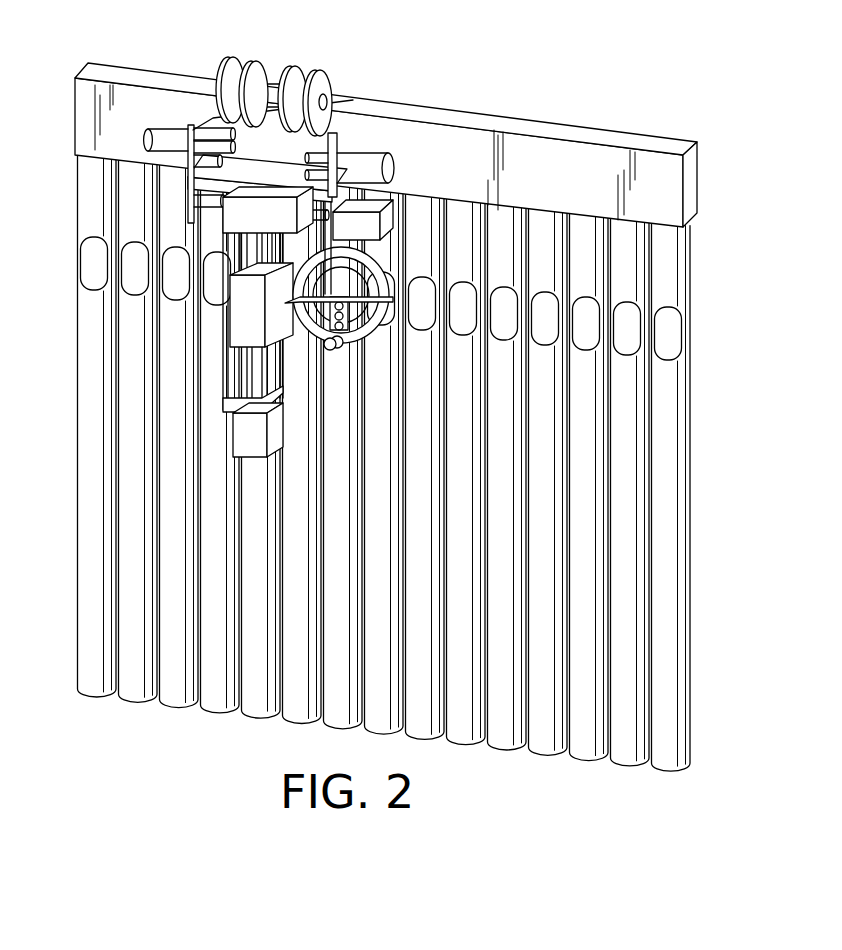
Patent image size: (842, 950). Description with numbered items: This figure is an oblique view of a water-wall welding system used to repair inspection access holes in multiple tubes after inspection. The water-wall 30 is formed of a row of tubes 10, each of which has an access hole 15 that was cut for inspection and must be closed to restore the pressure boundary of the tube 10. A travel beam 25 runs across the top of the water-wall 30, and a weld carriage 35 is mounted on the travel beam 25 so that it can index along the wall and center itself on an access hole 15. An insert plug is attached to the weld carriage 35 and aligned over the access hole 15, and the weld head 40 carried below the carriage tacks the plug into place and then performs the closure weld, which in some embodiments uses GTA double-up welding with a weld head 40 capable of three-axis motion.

The tube 10 is at (674, 456).
The access hole 15 is at (82, 246).
The travel beam 25 is at (556, 145).
The water-wall 30 is at (384, 463).
The weld carriage 35 is at (276, 56).
The weld head 40 is at (388, 251).